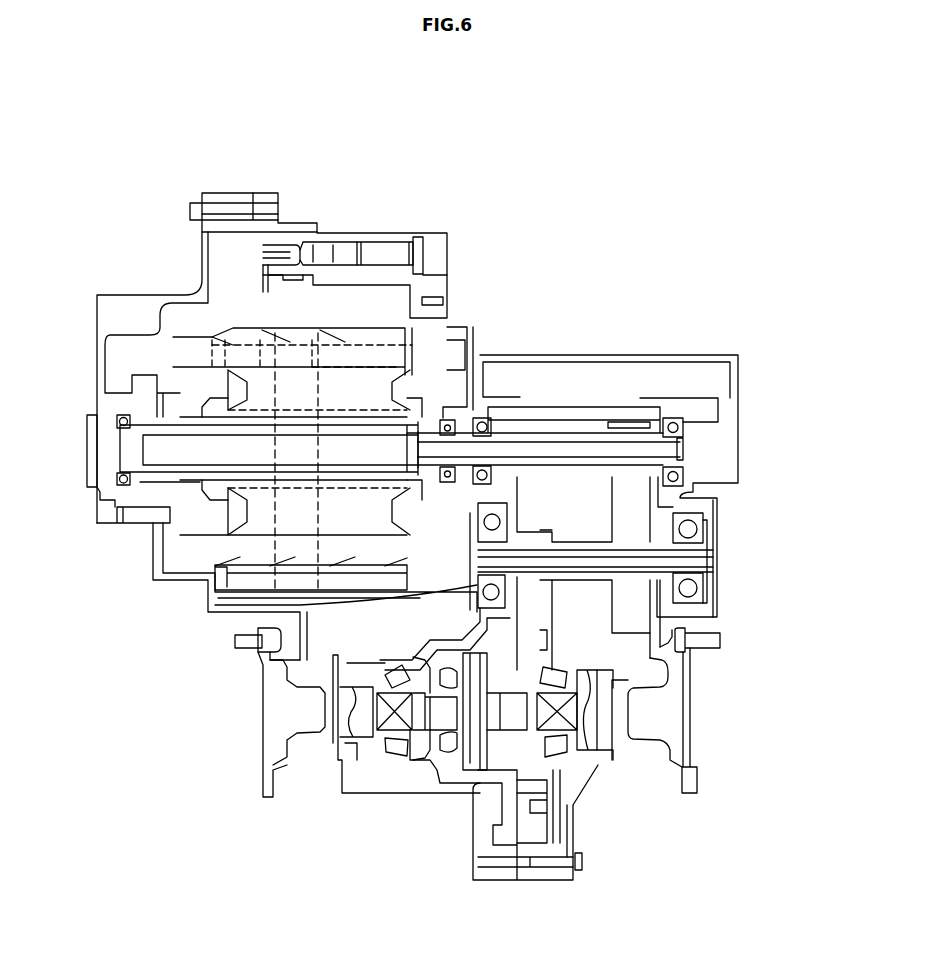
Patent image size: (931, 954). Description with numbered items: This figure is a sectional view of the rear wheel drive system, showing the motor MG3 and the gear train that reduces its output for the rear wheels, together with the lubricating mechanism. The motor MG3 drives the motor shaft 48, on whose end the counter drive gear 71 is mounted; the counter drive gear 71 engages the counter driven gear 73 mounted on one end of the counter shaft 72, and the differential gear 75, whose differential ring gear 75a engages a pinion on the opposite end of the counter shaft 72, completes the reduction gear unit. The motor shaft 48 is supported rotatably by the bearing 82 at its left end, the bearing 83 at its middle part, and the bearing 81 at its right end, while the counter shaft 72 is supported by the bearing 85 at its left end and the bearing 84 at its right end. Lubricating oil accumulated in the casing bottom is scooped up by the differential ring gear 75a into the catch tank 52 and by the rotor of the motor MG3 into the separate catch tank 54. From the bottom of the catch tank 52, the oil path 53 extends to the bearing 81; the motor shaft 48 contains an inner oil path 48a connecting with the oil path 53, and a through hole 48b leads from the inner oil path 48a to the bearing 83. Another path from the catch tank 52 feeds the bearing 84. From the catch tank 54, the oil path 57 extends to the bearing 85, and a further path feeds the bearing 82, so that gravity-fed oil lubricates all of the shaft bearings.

The motor shaft 48 is at (522, 430).
The inner oil path 48a is at (585, 447).
The through hole 48b is at (455, 437).
The catch tank 52 is at (687, 378).
The oil path 53 is at (722, 410).
The catch tank 54 is at (352, 627).
The oil path 57 is at (373, 607).
The counter drive gear 71 is at (625, 423).
The counter shaft 72 is at (580, 540).
The counter driven gear 73 is at (702, 500).
The differential gear 75 is at (403, 772).
The differential ring gear 75a is at (542, 598).
The bearing 81 is at (680, 468).
The bearing 82 is at (118, 417).
The bearing 83 is at (473, 420).
The bearing 84 is at (700, 576).
The bearing 85 is at (467, 612).
The motor MG3 is at (200, 515).